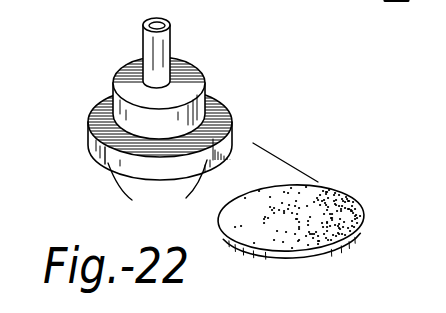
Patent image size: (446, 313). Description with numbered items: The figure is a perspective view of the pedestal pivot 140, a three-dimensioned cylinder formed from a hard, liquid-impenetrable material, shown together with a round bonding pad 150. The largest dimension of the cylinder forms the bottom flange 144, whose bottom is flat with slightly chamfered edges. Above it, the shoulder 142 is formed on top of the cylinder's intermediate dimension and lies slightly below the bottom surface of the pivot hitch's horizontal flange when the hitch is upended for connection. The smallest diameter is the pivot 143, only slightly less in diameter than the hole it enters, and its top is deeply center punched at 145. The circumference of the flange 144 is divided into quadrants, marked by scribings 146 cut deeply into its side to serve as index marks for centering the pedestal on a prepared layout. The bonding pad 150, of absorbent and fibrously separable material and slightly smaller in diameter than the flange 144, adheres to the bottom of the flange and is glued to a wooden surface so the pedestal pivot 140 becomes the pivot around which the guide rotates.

The pedestal pivot 140 is at (146, 91).
The shoulder 142 is at (196, 74).
The pivot 143 is at (143, 39).
The bottom flange 144 is at (98, 119).
The center punch 145 is at (163, 22).
The scribings 146 is at (157, 187).
The bonding pad 150 is at (332, 196).